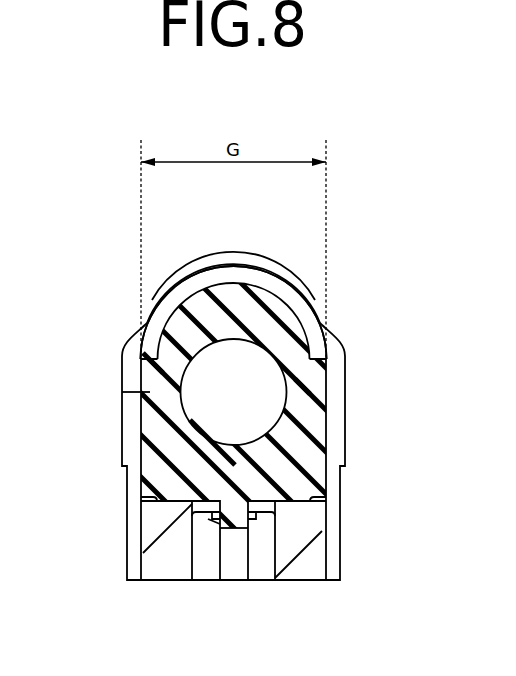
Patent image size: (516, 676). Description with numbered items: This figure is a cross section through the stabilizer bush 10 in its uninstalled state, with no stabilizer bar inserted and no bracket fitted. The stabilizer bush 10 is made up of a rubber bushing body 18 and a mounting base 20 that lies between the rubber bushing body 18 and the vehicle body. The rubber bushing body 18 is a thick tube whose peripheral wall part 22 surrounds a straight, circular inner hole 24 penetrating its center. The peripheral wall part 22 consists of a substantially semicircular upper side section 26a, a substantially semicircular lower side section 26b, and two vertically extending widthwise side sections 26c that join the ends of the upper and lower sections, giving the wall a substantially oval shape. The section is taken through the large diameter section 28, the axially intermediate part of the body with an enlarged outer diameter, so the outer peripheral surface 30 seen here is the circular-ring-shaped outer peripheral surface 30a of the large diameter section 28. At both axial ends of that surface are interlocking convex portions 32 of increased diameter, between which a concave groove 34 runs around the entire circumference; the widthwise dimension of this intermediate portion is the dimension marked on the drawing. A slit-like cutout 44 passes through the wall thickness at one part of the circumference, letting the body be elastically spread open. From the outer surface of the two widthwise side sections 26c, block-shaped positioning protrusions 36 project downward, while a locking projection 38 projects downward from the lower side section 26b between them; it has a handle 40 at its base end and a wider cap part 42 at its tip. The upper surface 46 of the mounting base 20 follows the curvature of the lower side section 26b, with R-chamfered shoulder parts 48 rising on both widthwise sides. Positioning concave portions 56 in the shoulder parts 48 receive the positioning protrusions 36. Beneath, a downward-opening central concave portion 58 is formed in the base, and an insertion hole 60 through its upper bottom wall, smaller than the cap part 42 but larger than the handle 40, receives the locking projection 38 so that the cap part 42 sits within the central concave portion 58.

The stabilizer bush 10 is at (381, 242).
The rubber bushing body 18 is at (349, 279).
The mounting base 20 is at (119, 485).
The peripheral wall part 22 is at (116, 309).
The inner hole 24 is at (266, 352).
The upper side section 26a is at (233, 307).
The lower side section 26b is at (232, 470).
The widthwise side section 26c is at (158, 384).
The large diameter section 28 is at (167, 283).
The outer peripheral surface 30 is at (189, 279).
The outer peripheral surface of the large diameter section 30a is at (234, 312).
The interlocking convex portion 32 is at (293, 297).
The concave groove 34 is at (216, 285).
The positioning protrusion 36 is at (148, 532).
The locking projection 38 is at (268, 638).
The handle 40 is at (256, 518).
The cap part 42 is at (224, 530).
The slit-like cutout 44 is at (147, 395).
The upper surface 46 is at (286, 501).
The shoulder part 48 is at (127, 464).
The positioning concave portion 56 is at (158, 505).
The central concave portion 58 is at (262, 578).
The insertion hole 60 is at (214, 518).